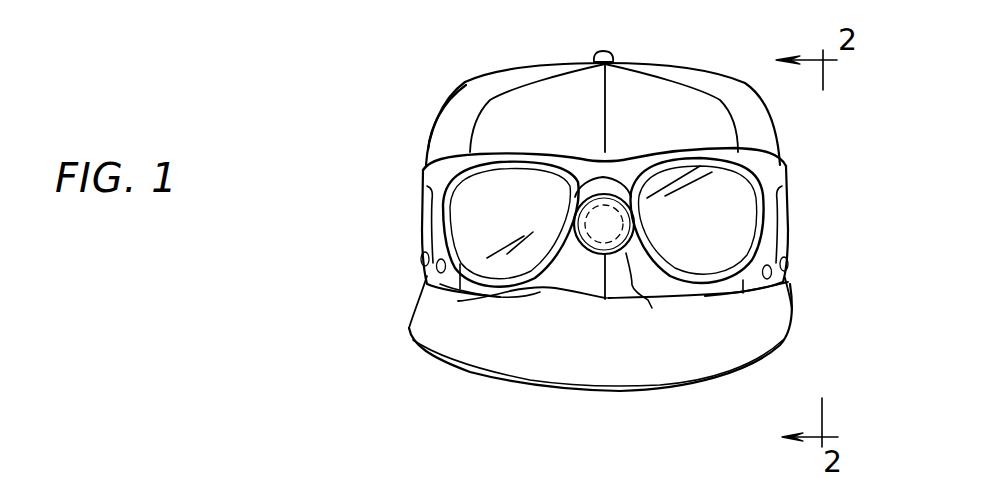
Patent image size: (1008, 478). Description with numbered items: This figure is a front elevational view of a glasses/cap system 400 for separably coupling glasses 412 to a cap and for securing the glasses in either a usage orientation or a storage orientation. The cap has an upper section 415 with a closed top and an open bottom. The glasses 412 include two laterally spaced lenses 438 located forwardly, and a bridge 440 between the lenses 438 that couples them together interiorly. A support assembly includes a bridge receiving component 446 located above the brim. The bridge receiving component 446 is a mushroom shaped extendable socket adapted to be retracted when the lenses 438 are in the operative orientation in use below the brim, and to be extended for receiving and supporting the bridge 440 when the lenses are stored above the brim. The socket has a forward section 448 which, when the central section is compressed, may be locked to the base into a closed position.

The glasses/cap system 400 is at (398, 98).
The upper section 415 is at (698, 78).
The glasses 412 is at (790, 186).
The lenses 438 is at (531, 220).
The bridge 440 is at (603, 178).
The bridge receiving component 446 is at (458, 301).
The forward section 448 is at (652, 308).